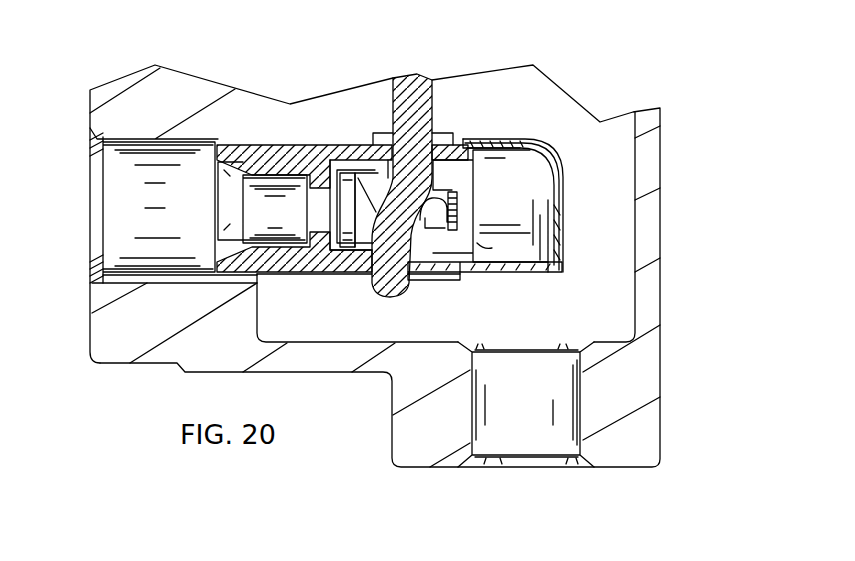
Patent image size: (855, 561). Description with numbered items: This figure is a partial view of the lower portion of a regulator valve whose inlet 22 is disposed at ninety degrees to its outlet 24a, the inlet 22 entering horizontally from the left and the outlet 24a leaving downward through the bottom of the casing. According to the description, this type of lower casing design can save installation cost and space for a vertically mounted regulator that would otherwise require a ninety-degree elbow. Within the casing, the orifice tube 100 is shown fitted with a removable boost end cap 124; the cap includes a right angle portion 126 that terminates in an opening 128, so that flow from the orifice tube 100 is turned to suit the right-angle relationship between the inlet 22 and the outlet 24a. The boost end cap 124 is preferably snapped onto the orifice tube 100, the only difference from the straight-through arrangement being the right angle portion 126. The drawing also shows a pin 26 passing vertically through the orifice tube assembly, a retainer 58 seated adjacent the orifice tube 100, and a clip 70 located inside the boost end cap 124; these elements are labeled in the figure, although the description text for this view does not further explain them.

The inlet 22 is at (113, 212).
The outlet 24a is at (533, 448).
The pin 26 is at (432, 100).
The retainer 58 is at (363, 172).
The clip 70 is at (466, 213).
The orifice tube 100 is at (295, 136).
The boost end cap 124 is at (548, 138).
The right angle portion 126 is at (563, 212).
The opening 128 is at (520, 274).